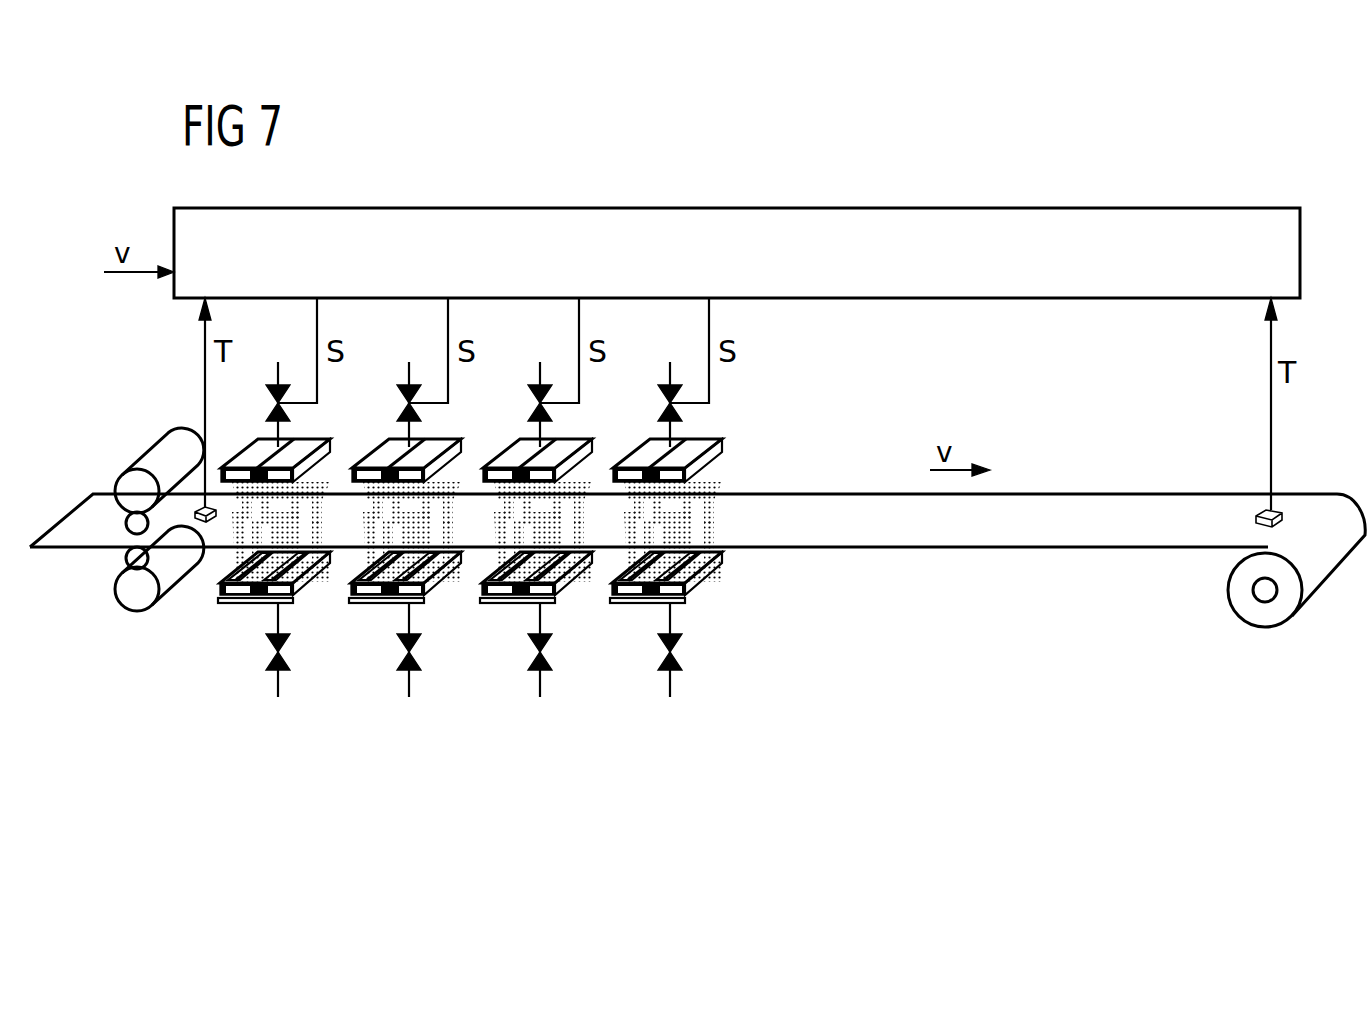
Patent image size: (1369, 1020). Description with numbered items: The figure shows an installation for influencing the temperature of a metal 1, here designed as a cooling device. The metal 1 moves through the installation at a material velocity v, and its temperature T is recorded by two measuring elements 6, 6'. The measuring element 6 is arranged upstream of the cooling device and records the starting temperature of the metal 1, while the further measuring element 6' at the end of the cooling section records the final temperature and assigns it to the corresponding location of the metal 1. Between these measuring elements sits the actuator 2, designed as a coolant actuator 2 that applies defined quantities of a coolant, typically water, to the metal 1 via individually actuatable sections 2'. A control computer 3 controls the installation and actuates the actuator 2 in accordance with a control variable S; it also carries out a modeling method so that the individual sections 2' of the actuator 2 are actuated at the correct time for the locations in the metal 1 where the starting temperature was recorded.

The metal 1 is at (80, 518).
The coolant actuator 2 is at (484, 541).
The individually actuatable sections 2' is at (484, 497).
The control computer 3 is at (978, 220).
The measuring element 6 is at (234, 423).
The measuring element 6' is at (1241, 424).